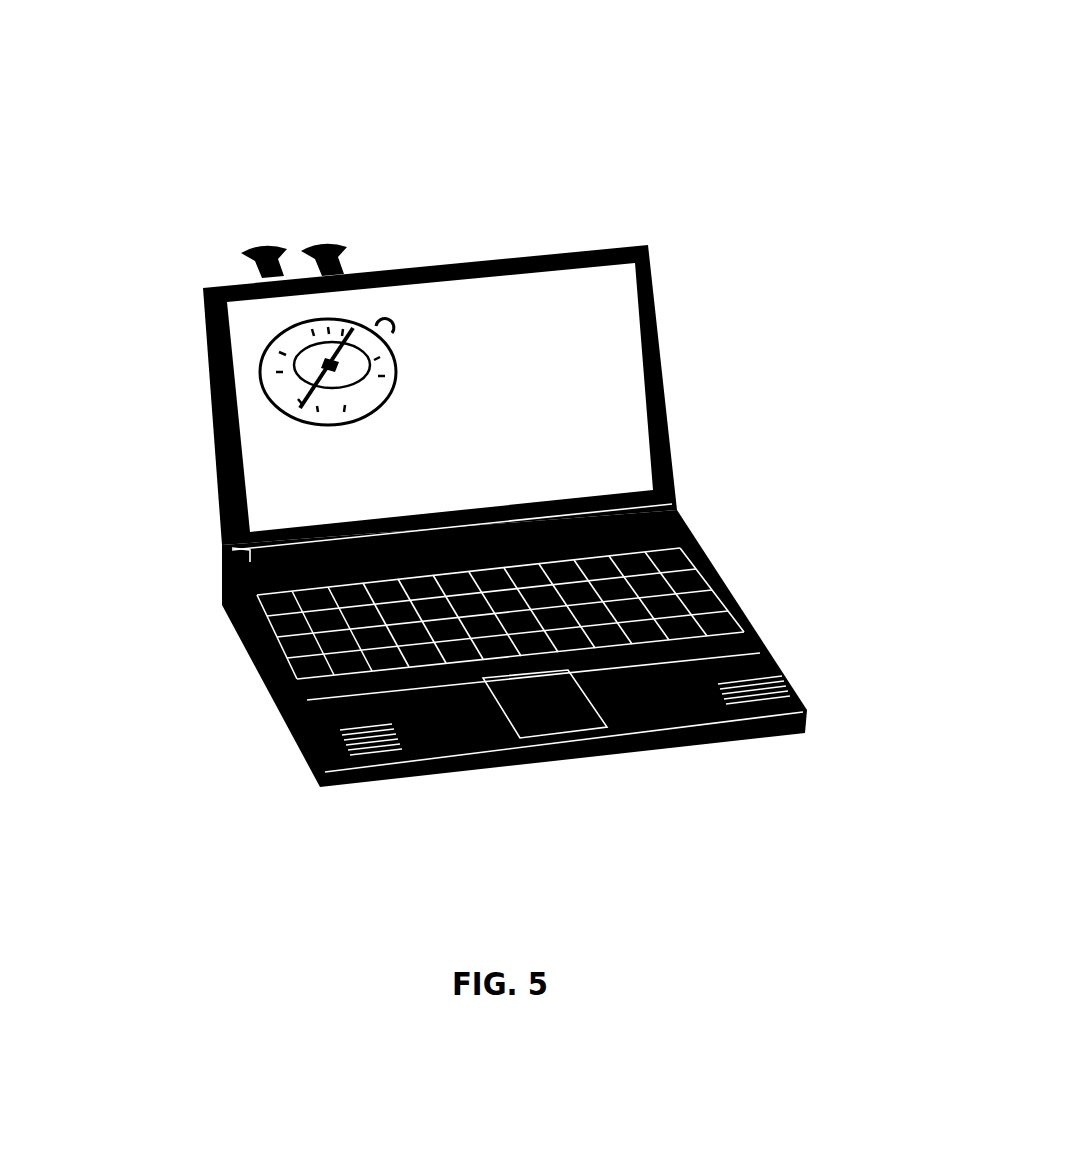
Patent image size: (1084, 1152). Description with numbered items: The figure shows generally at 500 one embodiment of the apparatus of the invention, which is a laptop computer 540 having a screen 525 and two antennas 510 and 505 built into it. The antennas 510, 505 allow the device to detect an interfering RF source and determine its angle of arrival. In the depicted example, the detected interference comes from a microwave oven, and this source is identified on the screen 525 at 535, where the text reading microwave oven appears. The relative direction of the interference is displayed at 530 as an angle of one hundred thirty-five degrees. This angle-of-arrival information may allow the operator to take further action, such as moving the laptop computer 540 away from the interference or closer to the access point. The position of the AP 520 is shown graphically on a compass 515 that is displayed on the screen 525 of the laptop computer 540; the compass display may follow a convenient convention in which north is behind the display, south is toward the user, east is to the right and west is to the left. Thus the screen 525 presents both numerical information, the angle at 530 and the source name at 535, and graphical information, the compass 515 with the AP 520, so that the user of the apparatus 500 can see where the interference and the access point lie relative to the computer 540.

The apparatus 500 is at (501, 399).
The antenna 505 is at (282, 218).
The antenna 510 is at (202, 239).
The compass 515 is at (257, 372).
The AP 520 is at (302, 462).
The screen 525 is at (366, 395).
The display of relative direction of interference 530 is at (641, 262).
The display of detected interference 535 is at (653, 333).
The laptop computer 540 is at (584, 645).